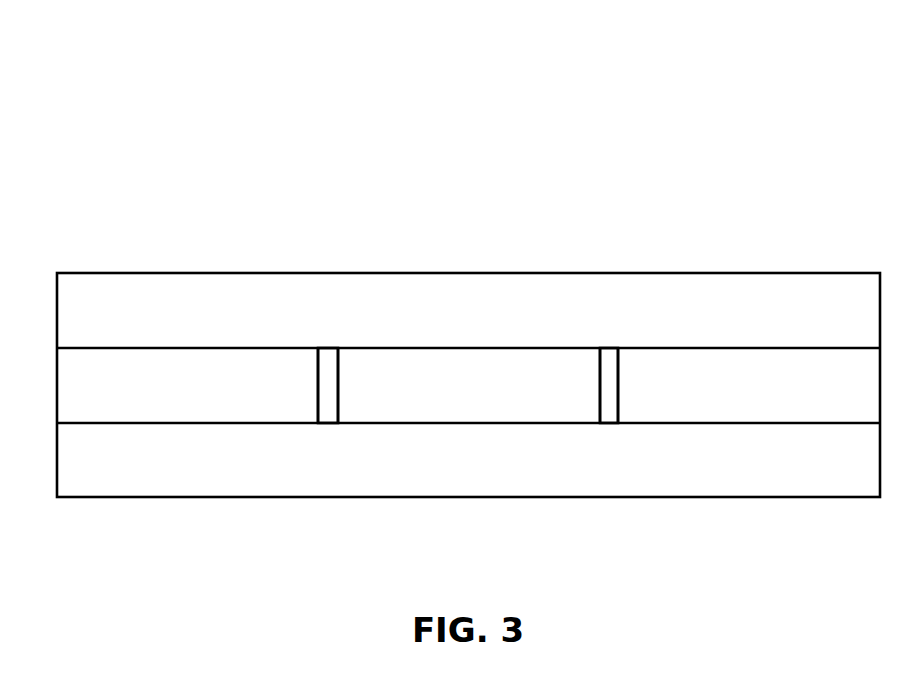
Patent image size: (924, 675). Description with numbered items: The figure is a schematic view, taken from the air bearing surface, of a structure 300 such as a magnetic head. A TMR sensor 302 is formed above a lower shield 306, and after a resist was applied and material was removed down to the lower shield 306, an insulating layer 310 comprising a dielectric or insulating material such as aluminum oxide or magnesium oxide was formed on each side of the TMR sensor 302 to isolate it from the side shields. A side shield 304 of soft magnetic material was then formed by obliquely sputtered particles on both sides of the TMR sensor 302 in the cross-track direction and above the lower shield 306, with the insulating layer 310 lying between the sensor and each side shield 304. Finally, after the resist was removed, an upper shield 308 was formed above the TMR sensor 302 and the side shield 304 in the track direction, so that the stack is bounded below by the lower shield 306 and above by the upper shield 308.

The structure 300 is at (492, 110).
The TMR sensor 302 is at (469, 385).
The side shield 304 is at (469, 385).
The lower shield 306 is at (468, 452).
The upper shield 308 is at (468, 315).
The insulating layer 310 is at (332, 348).